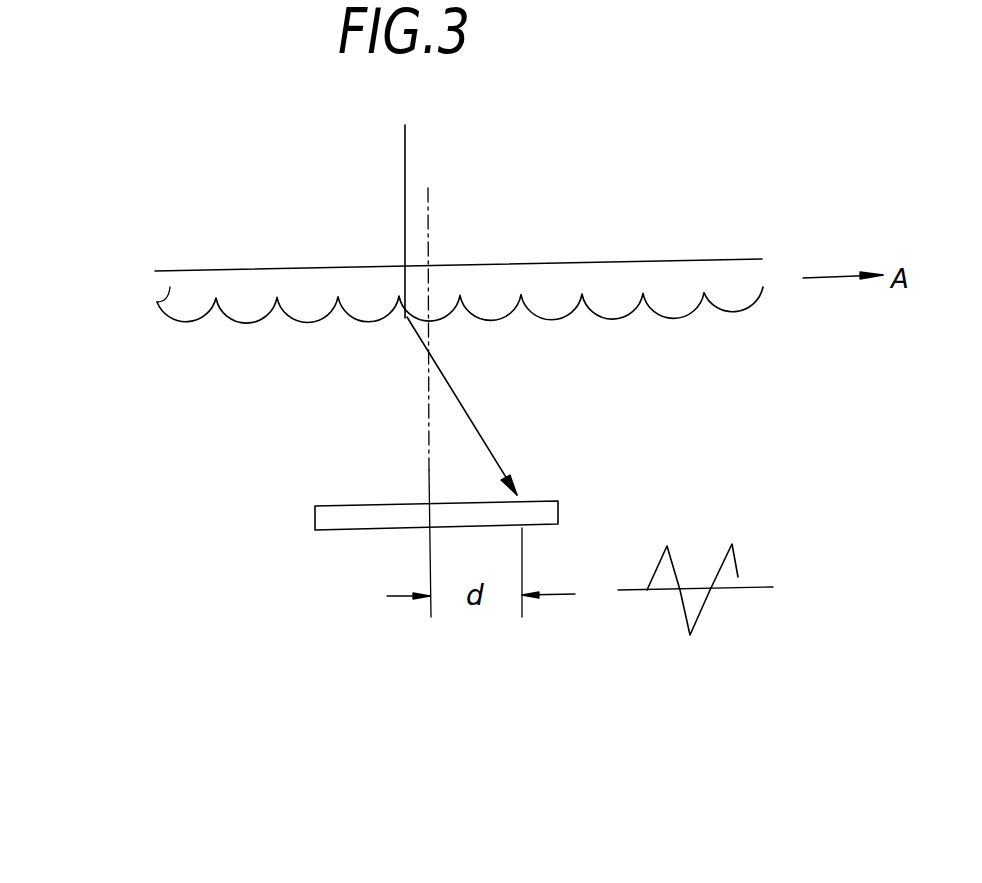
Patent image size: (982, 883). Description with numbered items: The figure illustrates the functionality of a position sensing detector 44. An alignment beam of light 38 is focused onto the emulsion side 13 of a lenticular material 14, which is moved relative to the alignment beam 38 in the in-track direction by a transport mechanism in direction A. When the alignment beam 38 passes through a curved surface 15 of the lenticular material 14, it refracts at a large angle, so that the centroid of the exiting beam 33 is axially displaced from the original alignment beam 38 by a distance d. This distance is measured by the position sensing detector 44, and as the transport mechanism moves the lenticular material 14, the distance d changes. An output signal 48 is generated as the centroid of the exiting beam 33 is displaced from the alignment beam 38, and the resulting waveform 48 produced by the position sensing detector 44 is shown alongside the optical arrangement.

The emulsion side 13 is at (341, 266).
The lenticular material 14 is at (157, 302).
The curved surface 15 is at (298, 325).
The exiting beam 33 is at (482, 438).
The alignment beam of light 38 is at (405, 150).
The position sensing detector 44 is at (558, 512).
The output signal 48 is at (735, 548).